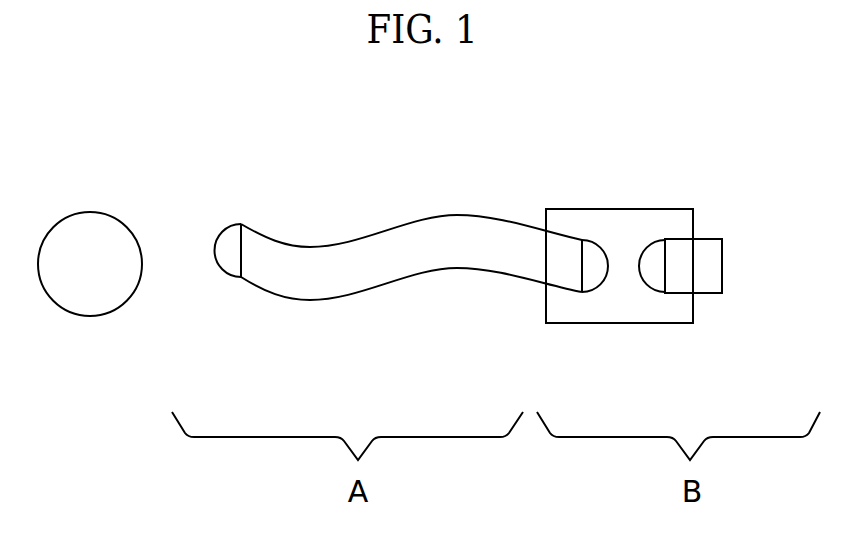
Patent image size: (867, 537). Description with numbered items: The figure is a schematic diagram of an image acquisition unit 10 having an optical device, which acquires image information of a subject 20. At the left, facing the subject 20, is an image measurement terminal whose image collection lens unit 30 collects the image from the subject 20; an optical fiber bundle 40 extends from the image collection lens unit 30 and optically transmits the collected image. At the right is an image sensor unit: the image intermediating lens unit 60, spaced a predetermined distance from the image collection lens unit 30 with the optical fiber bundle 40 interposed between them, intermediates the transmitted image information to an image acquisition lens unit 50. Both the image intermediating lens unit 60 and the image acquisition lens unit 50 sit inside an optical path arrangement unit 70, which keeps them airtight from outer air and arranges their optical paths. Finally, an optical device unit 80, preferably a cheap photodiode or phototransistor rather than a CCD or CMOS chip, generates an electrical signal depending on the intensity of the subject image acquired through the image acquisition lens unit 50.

The image acquisition unit 10 is at (456, 173).
The subject 20 is at (90, 305).
The image collection lens unit 30 is at (227, 262).
The optical fiber bundle 40 is at (413, 268).
The image acquisition lens unit 50 is at (652, 280).
The image intermediating lens unit 60 is at (595, 282).
The optical path arrangement unit 70 is at (665, 208).
The optical device unit 80 is at (713, 267).